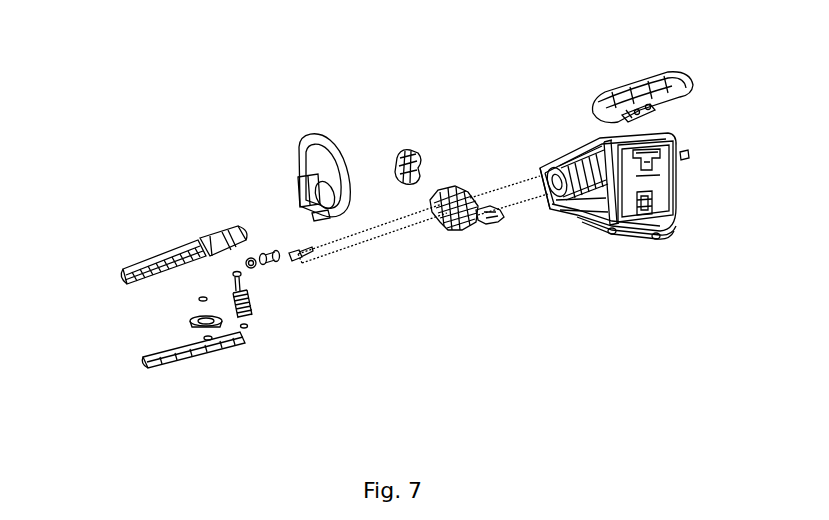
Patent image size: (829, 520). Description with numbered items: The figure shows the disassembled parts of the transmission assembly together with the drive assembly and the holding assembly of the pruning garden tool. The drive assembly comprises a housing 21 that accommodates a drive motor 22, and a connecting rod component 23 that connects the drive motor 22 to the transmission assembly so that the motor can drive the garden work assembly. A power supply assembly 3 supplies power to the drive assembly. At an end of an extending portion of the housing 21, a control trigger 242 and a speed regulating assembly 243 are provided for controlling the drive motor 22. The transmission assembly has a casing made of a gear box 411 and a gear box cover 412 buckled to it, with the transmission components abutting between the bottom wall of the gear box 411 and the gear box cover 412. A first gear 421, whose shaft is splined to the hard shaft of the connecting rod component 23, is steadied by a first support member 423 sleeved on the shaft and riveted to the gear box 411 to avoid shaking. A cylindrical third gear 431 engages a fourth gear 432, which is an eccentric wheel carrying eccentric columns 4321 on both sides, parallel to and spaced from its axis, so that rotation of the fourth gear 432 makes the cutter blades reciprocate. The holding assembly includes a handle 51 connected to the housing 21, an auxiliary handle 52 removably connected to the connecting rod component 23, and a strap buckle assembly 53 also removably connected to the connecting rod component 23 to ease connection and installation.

The power supply assembly 3 is at (676, 198).
The housing 21 is at (636, 236).
The drive motor 22 is at (593, 178).
The connecting rod component 23 is at (370, 248).
The handle 51 is at (680, 72).
The auxiliary handle 52 is at (292, 152).
The strap buckle assembly 53 is at (418, 131).
The control trigger 242 is at (487, 214).
The speed regulating assembly 243 is at (437, 212).
The gear box 411 is at (135, 260).
The gear box cover 412 is at (152, 363).
The first gear 421 is at (258, 272).
The first support member 423 is at (278, 245).
The third gear 431 is at (250, 312).
The fourth gear 432 is at (191, 347).
The eccentric column 4321 is at (196, 318).